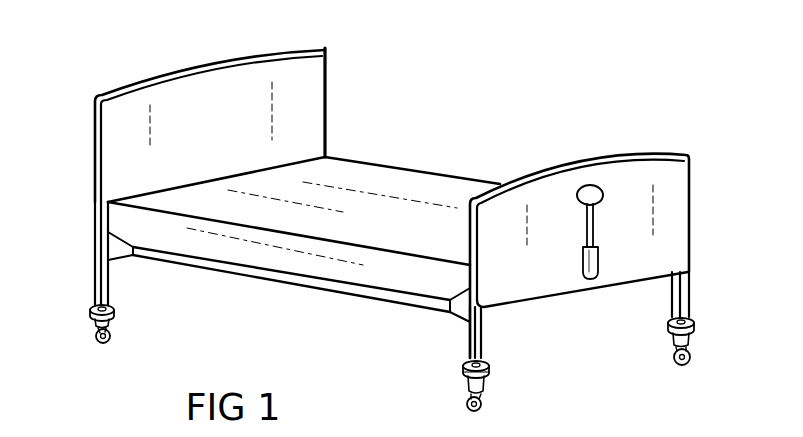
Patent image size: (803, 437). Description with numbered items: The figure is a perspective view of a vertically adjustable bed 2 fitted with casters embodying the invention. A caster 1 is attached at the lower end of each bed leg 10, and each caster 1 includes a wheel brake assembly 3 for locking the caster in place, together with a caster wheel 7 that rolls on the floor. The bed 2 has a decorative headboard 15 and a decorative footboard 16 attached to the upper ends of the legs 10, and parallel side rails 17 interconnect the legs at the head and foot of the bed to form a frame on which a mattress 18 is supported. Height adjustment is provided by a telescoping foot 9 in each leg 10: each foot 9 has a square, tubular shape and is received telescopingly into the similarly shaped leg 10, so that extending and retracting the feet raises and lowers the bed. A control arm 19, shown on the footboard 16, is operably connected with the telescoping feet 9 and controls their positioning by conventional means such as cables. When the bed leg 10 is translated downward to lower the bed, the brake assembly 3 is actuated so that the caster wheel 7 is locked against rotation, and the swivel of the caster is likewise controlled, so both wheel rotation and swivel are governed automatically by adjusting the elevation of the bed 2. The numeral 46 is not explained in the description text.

The caster 1 is at (88, 338).
The bed 2 is at (434, 161).
The wheel brake assembly 3 is at (459, 376).
The caster wheel 7 is at (110, 341).
The telescoping foot 9 is at (110, 309).
The bed leg 10 is at (101, 273).
The headboard 15 is at (178, 80).
The footboard 16 is at (627, 170).
The side rail 17 is at (279, 281).
The mattress 18 is at (352, 177).
The control arm 19 is at (597, 223).
The caster stem 46 is at (92, 311).